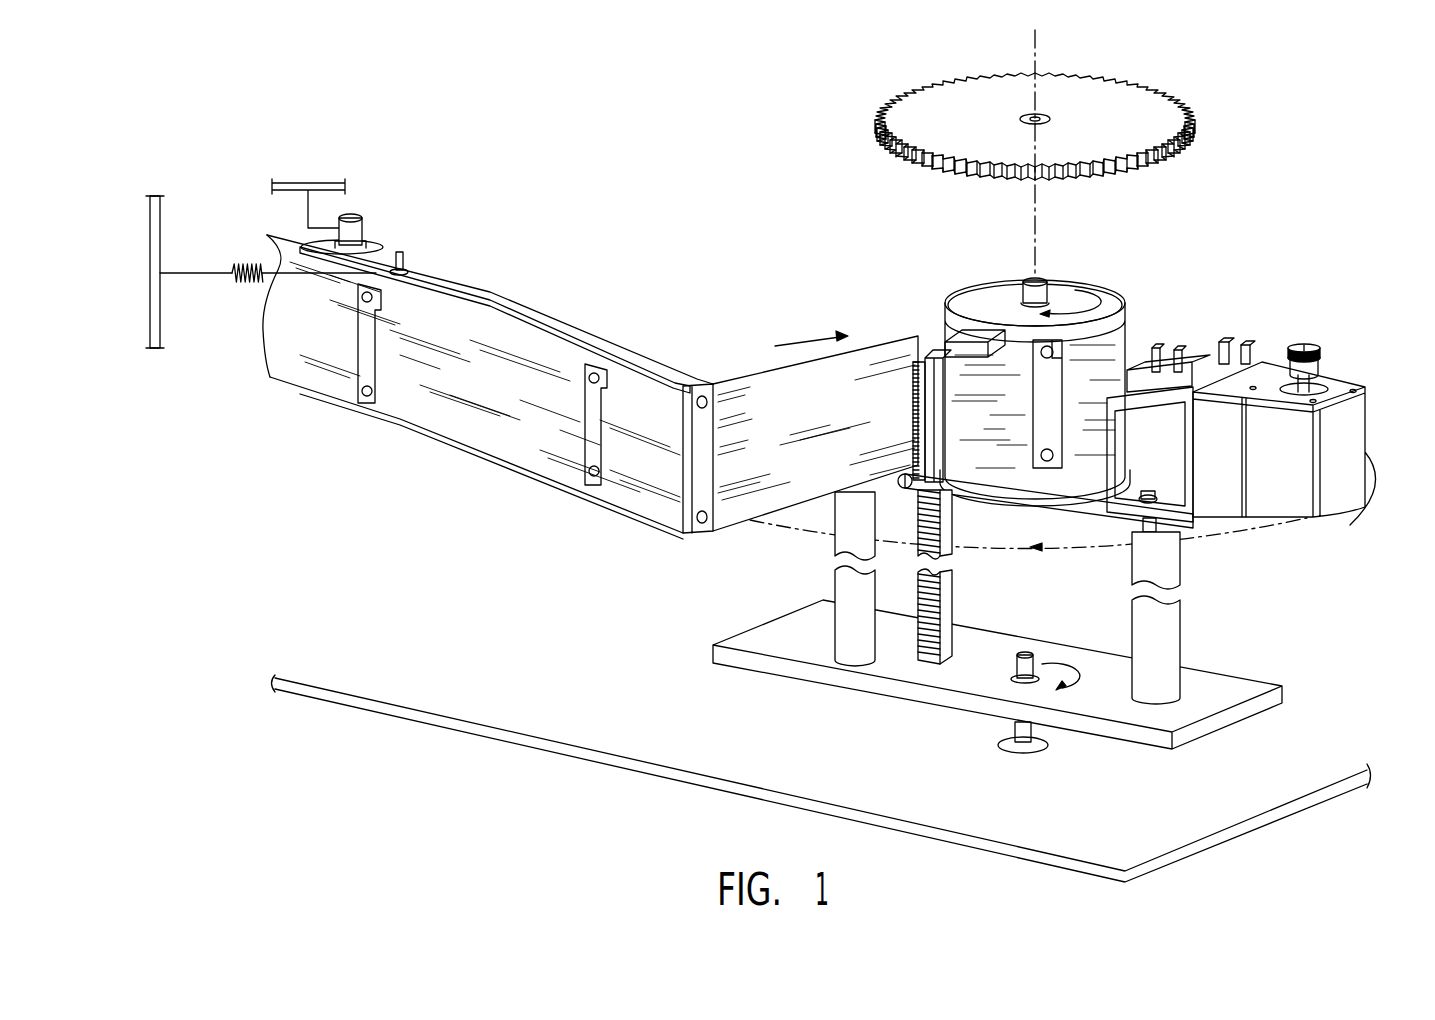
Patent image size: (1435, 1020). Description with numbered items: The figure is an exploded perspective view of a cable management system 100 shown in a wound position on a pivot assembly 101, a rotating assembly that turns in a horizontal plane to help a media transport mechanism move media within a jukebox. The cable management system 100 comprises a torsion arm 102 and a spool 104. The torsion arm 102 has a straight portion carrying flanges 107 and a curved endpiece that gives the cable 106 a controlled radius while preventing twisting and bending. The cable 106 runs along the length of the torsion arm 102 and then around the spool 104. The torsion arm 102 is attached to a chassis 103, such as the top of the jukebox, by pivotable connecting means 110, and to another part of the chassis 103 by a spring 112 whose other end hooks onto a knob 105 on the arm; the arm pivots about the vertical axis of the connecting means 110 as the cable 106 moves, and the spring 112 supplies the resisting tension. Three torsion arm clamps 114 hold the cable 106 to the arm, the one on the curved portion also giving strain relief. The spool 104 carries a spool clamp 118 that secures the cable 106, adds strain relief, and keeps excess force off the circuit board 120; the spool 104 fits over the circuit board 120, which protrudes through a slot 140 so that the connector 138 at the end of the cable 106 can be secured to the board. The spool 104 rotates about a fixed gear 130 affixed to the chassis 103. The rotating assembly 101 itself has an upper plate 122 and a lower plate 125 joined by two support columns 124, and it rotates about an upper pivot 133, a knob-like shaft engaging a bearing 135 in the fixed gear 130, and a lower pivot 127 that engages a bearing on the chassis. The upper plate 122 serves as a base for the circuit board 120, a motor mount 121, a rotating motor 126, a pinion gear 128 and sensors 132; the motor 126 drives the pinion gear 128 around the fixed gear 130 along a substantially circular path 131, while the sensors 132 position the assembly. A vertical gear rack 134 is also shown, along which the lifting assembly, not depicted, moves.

The cable management system 100 is at (693, 143).
The pivot assembly 101 is at (1186, 275).
The torsion arm 102 is at (500, 300).
The chassis 103 is at (310, 183).
The spool 104 is at (1112, 290).
The knob 105 is at (402, 252).
The cable 106 is at (755, 368).
The flanges 107 is at (540, 322).
The pivotable connecting means 110 is at (360, 214).
The spring 112 is at (195, 271).
The torsion arm clamps 114 is at (375, 377).
The spool clamp 118 is at (1040, 440).
The circuit board 120 is at (940, 345).
The motor mount 121 is at (1218, 520).
The upper plate 122 is at (1065, 495).
The support columns 124 is at (833, 540).
The lower plate 125 is at (1245, 685).
The rotating motor 126 is at (1330, 503).
The lower pivot 127 is at (1013, 668).
The pinion gear 128 is at (1313, 345).
The fixed gear 130 is at (1196, 122).
The circular path 131 is at (1128, 548).
The sensors 132 is at (1222, 345).
The upper pivot 133 is at (1030, 288).
The vertical gear rack 134 is at (953, 592).
The bearing 135 is at (1052, 120).
The connector 138 is at (935, 346).
The slot 140 is at (938, 346).